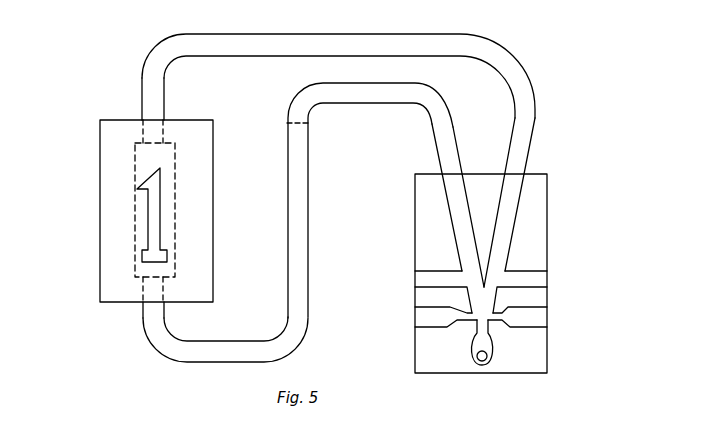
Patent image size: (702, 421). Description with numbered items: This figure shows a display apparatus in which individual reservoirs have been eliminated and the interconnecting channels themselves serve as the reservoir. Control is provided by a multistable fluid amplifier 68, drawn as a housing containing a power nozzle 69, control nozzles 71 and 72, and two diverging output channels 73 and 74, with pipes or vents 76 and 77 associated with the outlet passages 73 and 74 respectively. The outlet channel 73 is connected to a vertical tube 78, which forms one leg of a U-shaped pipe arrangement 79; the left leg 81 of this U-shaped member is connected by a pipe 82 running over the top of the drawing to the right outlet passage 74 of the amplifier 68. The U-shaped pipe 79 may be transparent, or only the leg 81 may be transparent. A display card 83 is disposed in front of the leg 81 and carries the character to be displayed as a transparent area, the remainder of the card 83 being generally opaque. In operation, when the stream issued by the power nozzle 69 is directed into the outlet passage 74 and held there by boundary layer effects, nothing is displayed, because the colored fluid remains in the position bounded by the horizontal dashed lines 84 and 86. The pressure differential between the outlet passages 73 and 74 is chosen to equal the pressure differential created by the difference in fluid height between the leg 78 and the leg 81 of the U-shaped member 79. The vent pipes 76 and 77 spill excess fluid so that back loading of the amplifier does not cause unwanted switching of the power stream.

The multistable fluid amplifier 68 is at (582, 306).
The power nozzle 69 is at (486, 330).
The control nozzle 71 is at (425, 316).
The control nozzle 72 is at (547, 320).
The output channel 73 is at (462, 222).
The output channel 74 is at (507, 218).
The vent pipe 76 is at (425, 277).
The vent pipe 77 is at (547, 282).
The vertical tube 78 is at (306, 210).
The U-shaped pipe arrangement 79 is at (250, 340).
The left leg 81 is at (153, 101).
The pipe 82 is at (352, 43).
The display card 83 is at (100, 175).
The horizontal dashed line 84 is at (156, 310).
The horizontal dashed line 86 is at (297, 128).